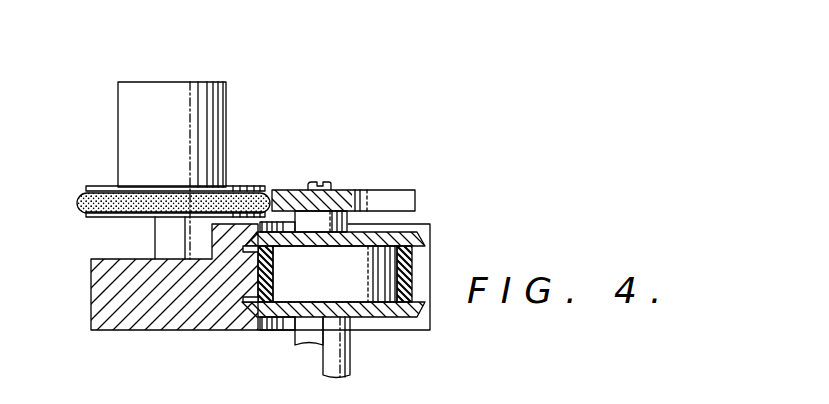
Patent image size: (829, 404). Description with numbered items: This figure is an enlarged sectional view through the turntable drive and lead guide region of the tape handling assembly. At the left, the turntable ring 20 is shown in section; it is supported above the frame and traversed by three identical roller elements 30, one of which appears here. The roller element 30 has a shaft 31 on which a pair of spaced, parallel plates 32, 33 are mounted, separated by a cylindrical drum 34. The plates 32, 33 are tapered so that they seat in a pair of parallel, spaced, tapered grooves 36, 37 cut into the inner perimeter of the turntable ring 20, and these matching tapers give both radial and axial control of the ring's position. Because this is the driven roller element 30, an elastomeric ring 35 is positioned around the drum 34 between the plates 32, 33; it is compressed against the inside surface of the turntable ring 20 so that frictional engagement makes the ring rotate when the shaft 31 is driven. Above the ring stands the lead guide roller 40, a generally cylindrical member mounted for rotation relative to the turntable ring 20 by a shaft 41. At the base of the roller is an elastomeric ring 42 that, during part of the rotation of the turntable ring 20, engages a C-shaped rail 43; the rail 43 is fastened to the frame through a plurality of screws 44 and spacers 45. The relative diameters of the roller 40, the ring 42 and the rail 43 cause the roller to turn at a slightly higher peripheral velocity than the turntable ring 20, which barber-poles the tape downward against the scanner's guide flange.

The turntable ring 20 is at (108, 305).
The roller element 30 is at (371, 292).
The shaft 31 is at (337, 357).
The plate 32 is at (403, 238).
The plate 33 is at (407, 307).
The cylindrical drum 34 is at (343, 288).
The elastomeric ring 35 is at (407, 272).
The tapered groove 36 is at (242, 260).
The tapered groove 37 is at (255, 306).
The lead guide roller 40 is at (210, 117).
The shaft 41 is at (165, 240).
The elastomeric ring 42 is at (100, 203).
The C-shaped rail 43 is at (387, 195).
The screw 44 is at (328, 185).
The spacer 45 is at (308, 334).